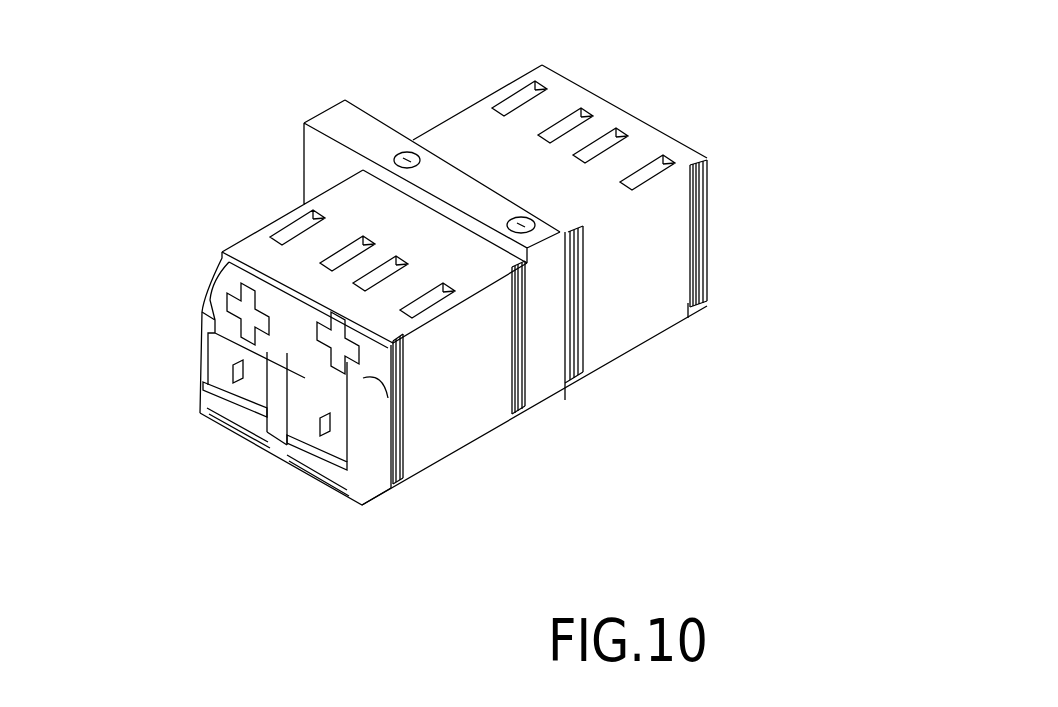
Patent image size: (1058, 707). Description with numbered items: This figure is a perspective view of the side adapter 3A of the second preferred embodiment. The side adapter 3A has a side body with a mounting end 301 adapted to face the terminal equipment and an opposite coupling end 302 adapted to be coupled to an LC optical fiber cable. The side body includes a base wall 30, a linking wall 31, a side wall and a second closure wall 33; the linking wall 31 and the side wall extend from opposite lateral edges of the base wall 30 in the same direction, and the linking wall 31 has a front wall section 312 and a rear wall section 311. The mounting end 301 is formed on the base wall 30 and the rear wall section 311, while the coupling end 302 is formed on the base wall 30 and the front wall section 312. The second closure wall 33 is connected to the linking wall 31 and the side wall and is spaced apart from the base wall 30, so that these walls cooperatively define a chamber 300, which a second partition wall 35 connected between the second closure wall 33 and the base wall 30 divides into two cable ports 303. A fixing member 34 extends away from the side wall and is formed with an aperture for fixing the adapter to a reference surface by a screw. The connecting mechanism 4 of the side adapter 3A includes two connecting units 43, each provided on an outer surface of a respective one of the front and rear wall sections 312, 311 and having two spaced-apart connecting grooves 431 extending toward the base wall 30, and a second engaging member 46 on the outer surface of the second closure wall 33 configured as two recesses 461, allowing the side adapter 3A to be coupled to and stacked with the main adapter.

The connecting mechanism 4 is at (668, 463).
The side adapter 3A is at (218, 145).
The base wall 30 is at (352, 500).
The chamber 300 is at (189, 396).
The mounting end 301 is at (664, 124).
The coupling end 302 is at (192, 350).
The cable ports 303 is at (236, 429).
The linking wall 31 is at (658, 332).
The rear wall section 311 is at (670, 312).
The front wall section 312 is at (457, 442).
The second closure wall 33 is at (478, 110).
The fixing member 34 is at (320, 93).
The second partition wall 35 is at (283, 400).
The connecting units 43 is at (704, 297).
The connecting grooves 431 is at (698, 218).
The second engaging member 46 is at (410, 146).
The recesses 461 is at (508, 222).